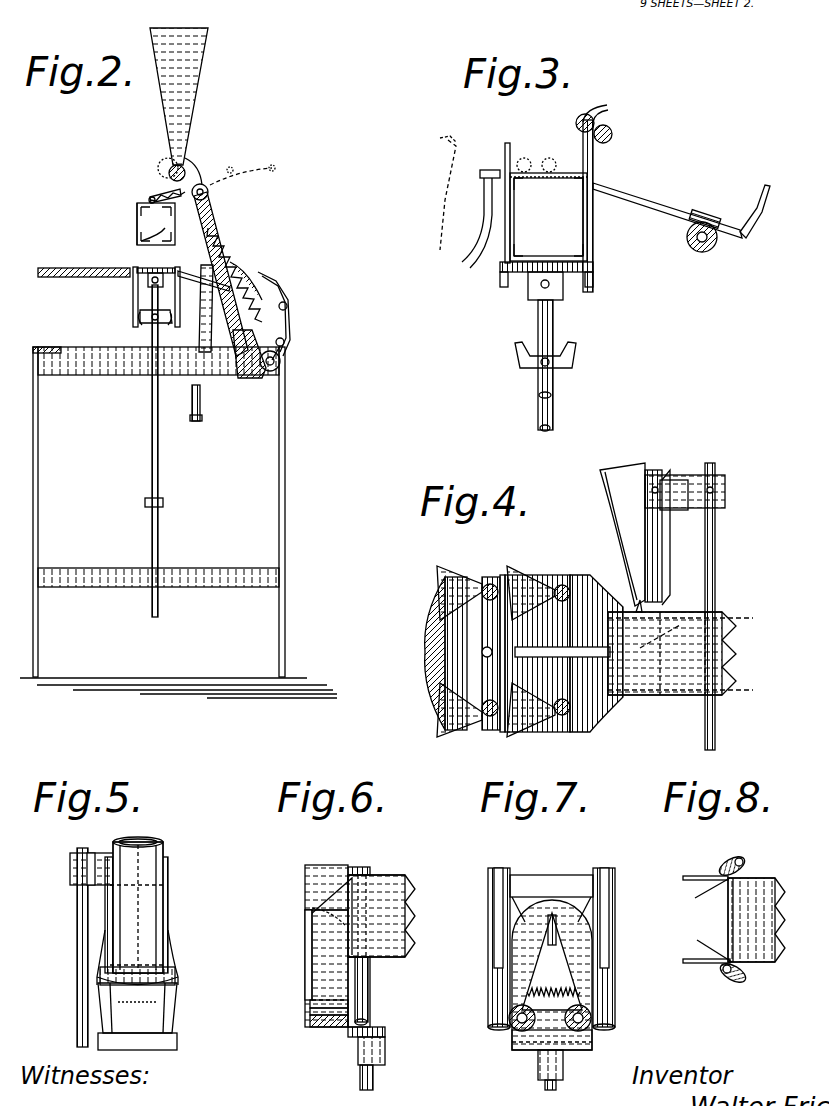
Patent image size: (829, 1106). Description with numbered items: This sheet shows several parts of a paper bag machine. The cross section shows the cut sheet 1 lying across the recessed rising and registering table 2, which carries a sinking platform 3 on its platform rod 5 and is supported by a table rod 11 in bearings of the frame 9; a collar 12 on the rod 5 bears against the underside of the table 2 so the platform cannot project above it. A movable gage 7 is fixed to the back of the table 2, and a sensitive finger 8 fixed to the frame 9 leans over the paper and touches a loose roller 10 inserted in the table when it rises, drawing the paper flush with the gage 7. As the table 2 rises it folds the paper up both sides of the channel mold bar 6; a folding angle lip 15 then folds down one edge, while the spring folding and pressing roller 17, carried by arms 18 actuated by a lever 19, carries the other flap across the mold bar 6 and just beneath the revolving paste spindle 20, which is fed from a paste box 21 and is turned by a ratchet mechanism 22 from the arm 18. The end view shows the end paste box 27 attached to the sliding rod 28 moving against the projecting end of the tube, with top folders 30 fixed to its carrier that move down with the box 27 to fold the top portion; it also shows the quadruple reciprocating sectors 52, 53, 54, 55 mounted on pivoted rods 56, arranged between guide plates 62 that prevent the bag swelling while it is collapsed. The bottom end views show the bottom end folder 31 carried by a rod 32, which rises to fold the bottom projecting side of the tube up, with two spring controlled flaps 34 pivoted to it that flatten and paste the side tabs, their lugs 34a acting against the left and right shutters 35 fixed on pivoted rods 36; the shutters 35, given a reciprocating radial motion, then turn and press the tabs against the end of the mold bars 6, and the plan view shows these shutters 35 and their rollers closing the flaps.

In FIG. 2, the cut sheet 1 is at (137, 226).
In FIG. 3, the cut sheet 1 is at (596, 163).
In FIG. 5, the cut sheet 1 is at (142, 1024).
In FIG. 6, the cut sheet 1 is at (400, 882).
In FIG. 7, the cut sheet 1 is at (566, 880).
In FIG. 8, the cut sheet 1 is at (730, 926).
In FIG. 2, the rising and registering table 2 is at (180, 278).
In FIG. 3, the rising and registering table 2 is at (660, 205).
In FIG. 2, the sinking platform 3 is at (150, 270).
In FIG. 3, the sinking platform 3 is at (594, 268).
In FIG. 2, the platform rod 5 is at (160, 430).
In FIG. 3, the platform rod 5 is at (553, 326).
In FIG. 2, the channel mold bar 6 is at (137, 208).
In FIG. 3, the channel mold bar 6 is at (510, 196).
In FIG. 4, the channel mold bar 6 is at (740, 628).
In FIG. 2, the movable gage 7 is at (262, 280).
In FIG. 3, the movable gage 7 is at (768, 180).
In FIG. 2, the sensitive finger 8 is at (245, 275).
In FIG. 2, the frame 9 is at (50, 350).
In FIG. 2, the loose roller 10 is at (236, 360).
In FIG. 3, the loose roller 10 is at (692, 250).
In FIG. 3, the table rod 11 is at (553, 418).
In FIG. 2, the collar 12 is at (148, 325).
In FIG. 3, the collar 12 is at (505, 258).
In FIG. 3, the folding angle lip 15 is at (505, 168).
In FIG. 2, the spring folding and pressing roller 17 is at (158, 197).
In FIG. 3, the spring folding and pressing roller 17 is at (612, 134).
In FIG. 2, the roller arm 18 is at (207, 215).
In FIG. 2, the lever 19 is at (195, 405).
In FIG. 2, the revolving paste spindle 20 is at (170, 168).
In FIG. 3, the revolving paste spindle 20 is at (582, 115).
In FIG. 2, the paste box 21 is at (190, 70).
In FIG. 2, the ratchet mechanism 22 is at (196, 163).
In FIG. 4, the end paste box 27 is at (603, 502).
In FIG. 5, the end paste box 27 is at (140, 905).
In FIG. 4, the sliding rod 28 is at (716, 730).
In FIG. 5, the sliding rod 28 is at (76, 850).
In FIG. 4, the top folder 30 is at (680, 560).
In FIG. 5, the top folder 30 is at (100, 946).
In FIG. 6, the bottom end folder 31 is at (322, 905).
In FIG. 7, the bottom end folder 31 is at (575, 915).
In FIG. 6, the folder rod 32 is at (362, 1080).
In FIG. 7, the folder rod 32 is at (560, 1084).
In FIG. 6, the spring controlled flap 34 is at (306, 982).
In FIG. 7, the spring controlled flap 34 is at (595, 984).
In FIG. 6, the lug 34a is at (310, 1005).
In FIG. 7, the lug 34a is at (628, 1002).
In FIG. 6, the shutter 35 is at (310, 882).
In FIG. 7, the shutter 35 is at (494, 934).
In FIG. 8, the shutter 35 is at (695, 876).
In FIG. 6, the pivoted rod 36 is at (370, 1000).
In FIG. 7, the pivoted rod 36 is at (515, 1017).
In FIG. 8, the pivoted rod 36 is at (734, 858).
In FIG. 4, the reciprocating sector 52 is at (448, 570).
In FIG. 4, the reciprocating sector 53 is at (530, 576).
In FIG. 4, the reciprocating sector 54 is at (448, 714).
In FIG. 4, the reciprocating sector 55 is at (525, 715).
In FIG. 4, the pivoted rod 56 is at (490, 584).
In FIG. 4, the guide plate 62 is at (452, 634).